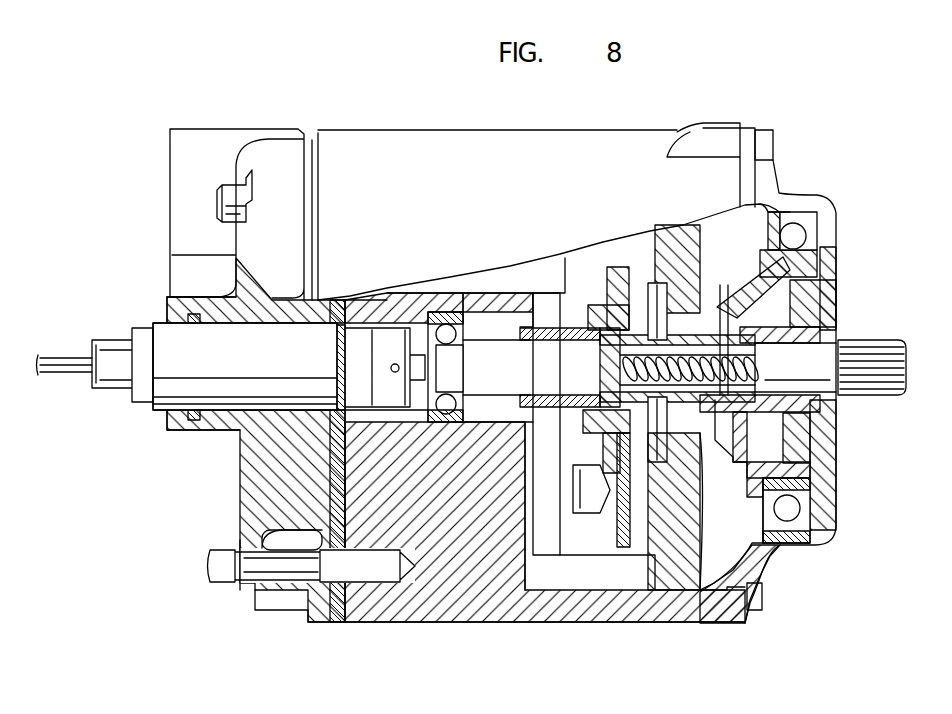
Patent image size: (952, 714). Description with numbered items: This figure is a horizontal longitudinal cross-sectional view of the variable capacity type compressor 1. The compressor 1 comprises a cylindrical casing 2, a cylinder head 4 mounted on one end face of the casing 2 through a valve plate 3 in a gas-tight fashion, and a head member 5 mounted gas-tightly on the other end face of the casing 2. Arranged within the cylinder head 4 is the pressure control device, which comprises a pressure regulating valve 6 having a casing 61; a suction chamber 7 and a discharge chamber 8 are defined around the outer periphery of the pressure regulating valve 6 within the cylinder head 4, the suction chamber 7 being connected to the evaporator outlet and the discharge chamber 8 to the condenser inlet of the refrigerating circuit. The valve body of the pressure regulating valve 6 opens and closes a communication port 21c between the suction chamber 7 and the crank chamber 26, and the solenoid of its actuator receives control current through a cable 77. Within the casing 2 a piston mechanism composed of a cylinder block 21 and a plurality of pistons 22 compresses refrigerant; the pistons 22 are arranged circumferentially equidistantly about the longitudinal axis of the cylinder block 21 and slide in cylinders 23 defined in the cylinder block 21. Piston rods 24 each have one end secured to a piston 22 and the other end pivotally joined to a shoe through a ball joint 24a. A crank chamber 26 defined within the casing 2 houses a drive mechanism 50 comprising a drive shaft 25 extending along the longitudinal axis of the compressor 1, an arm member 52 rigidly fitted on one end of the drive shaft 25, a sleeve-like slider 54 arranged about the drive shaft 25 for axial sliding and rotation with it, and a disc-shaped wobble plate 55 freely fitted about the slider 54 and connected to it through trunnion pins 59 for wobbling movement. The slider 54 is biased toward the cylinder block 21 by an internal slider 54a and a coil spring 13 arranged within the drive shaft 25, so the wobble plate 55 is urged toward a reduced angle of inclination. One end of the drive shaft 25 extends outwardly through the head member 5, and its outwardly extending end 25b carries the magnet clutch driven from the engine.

The compressor 1 is at (603, 128).
The cylindrical casing 2 is at (514, 130).
The valve plate 3 is at (340, 598).
The cylinder head 4 is at (190, 428).
The head member 5 is at (762, 175).
The pressure regulating valve 6 is at (172, 388).
The suction chamber 7 is at (285, 440).
The discharge chamber 8 is at (270, 530).
The coil spring 13 is at (705, 415).
The cylinder block 21 is at (475, 613).
The communication port 21c is at (420, 314).
The pistons 22 is at (550, 645).
The cylinders 23 is at (508, 293).
The piston rods 24 is at (606, 493).
The ball joints 24a is at (655, 540).
The drive shaft 25 is at (820, 375).
The outwardly extending end of the drive shaft 25b is at (862, 348).
The crank chamber 26 is at (700, 592).
The drive mechanism 50 is at (700, 505).
The arm member 52 is at (742, 285).
The slider 54 is at (555, 412).
The internal slider 54a is at (596, 366).
The wobble plate 55 is at (660, 572).
The trunnion pins 59 is at (650, 298).
The casing 61 is at (165, 322).
The cable 77 is at (68, 378).